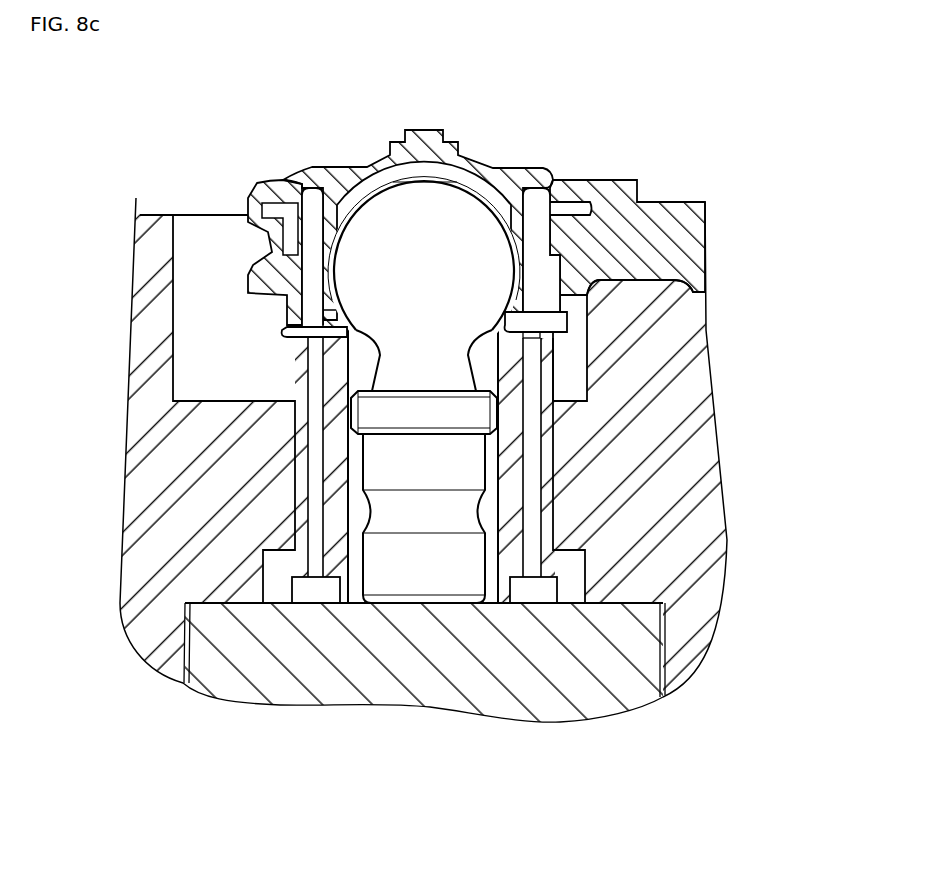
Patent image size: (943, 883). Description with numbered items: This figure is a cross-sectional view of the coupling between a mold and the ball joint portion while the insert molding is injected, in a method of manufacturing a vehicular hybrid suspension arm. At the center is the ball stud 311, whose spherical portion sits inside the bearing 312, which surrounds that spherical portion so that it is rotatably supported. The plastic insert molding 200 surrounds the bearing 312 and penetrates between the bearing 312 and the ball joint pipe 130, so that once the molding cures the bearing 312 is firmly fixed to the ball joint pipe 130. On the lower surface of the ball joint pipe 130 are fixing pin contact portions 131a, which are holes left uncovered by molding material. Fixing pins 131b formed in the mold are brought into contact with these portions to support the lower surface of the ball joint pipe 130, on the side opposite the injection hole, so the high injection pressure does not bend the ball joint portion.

The ball joint pipe 130 is at (310, 205).
The fixing pin contact portions 131a is at (293, 327).
The fixing pins 131b is at (315, 444).
The plastic insert molding 200 is at (313, 170).
The ball stud 311 is at (423, 573).
The bearing 312 is at (477, 190).